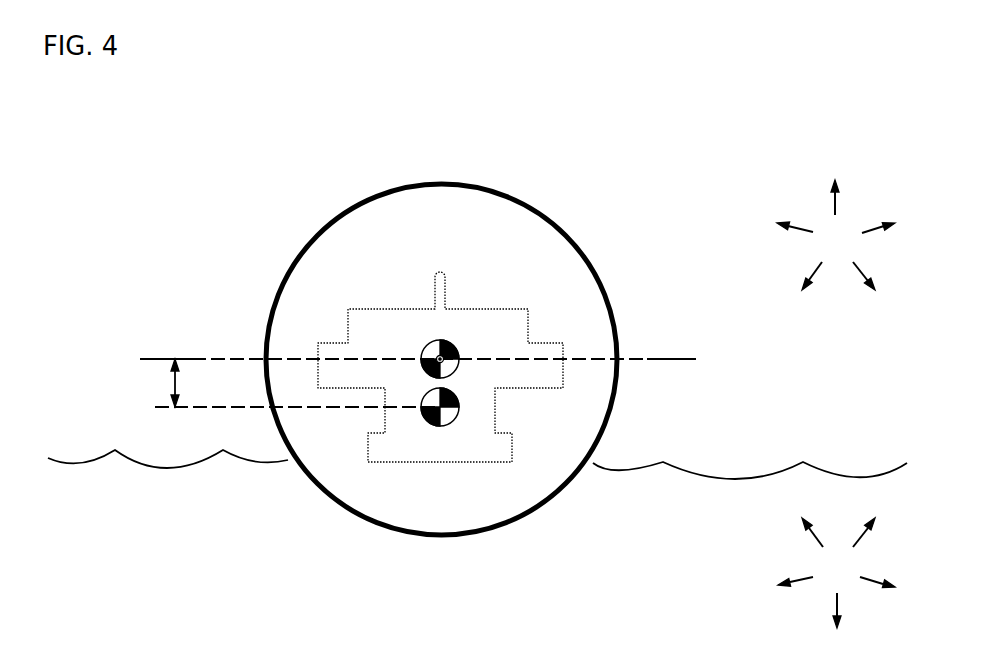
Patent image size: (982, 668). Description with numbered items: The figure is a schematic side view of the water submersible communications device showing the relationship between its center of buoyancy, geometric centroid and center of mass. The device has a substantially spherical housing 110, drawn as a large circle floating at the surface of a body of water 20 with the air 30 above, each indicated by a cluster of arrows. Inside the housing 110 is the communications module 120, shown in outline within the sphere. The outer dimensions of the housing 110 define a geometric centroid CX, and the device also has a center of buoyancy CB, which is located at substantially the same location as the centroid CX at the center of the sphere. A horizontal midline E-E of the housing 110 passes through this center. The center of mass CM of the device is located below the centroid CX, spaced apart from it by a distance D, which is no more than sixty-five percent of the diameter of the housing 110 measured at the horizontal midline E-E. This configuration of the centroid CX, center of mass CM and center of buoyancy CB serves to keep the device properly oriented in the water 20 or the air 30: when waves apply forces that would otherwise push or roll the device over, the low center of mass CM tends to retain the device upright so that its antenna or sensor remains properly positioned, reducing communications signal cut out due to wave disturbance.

The housing 110 is at (305, 478).
The communications module 120 is at (411, 468).
The center of buoyancy CB is at (460, 343).
The center of mass CM is at (463, 424).
The geometric centroid CX is at (426, 348).
The horizontal midline E is at (418, 362).
The distance D is at (178, 383).
The air 30 is at (836, 235).
The body of water 20 is at (836, 573).